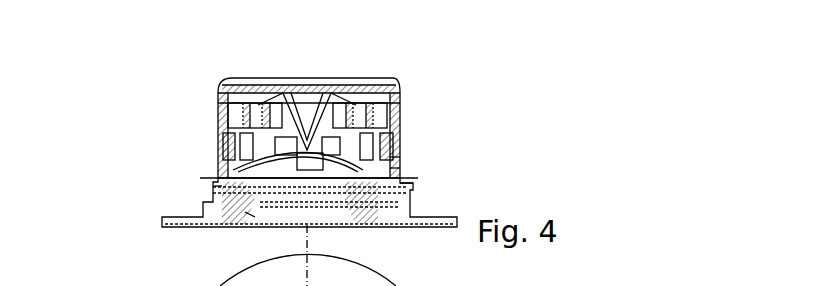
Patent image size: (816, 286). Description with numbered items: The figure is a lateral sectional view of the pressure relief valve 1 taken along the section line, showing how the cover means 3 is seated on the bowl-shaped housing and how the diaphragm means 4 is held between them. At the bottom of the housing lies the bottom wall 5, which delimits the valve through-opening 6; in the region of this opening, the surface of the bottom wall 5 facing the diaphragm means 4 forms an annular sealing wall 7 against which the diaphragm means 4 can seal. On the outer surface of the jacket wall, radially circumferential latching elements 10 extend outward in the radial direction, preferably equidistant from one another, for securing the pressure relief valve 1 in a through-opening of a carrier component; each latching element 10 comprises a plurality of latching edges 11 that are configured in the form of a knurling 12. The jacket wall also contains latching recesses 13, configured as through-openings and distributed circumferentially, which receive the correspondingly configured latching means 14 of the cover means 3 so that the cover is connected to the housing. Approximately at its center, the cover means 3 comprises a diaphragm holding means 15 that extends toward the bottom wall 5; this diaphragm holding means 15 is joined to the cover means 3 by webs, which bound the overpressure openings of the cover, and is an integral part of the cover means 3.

The pressure relief valve 1 is at (565, 103).
The cover means 3 is at (223, 80).
The diaphragm means 4 is at (373, 160).
The bottom wall 5 is at (408, 186).
The valve through-opening 6 is at (250, 215).
The annular sealing wall 7 is at (218, 172).
The latching elements 10 is at (400, 157).
The latching edges 11 is at (402, 168).
The knurling 12 is at (214, 186).
The latching recesses 13 is at (228, 118).
The latching means 14 is at (228, 124).
The diaphragm holding means 15 is at (300, 92).